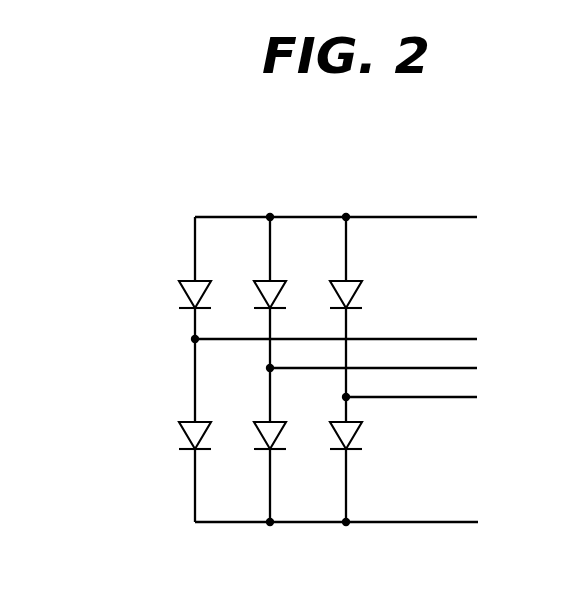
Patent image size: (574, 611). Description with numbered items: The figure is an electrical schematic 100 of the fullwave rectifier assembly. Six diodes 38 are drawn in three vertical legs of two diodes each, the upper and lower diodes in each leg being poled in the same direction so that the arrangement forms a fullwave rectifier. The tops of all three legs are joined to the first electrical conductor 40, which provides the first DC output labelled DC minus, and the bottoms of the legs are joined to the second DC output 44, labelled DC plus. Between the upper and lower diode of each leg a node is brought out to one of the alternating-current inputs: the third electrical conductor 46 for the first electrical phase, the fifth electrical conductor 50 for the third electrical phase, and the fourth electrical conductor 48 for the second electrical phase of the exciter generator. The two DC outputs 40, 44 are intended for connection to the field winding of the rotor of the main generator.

The electrical schematic 100 is at (195, 185).
The diode 38 is at (192, 294).
The first electrical conductor 40 is at (443, 216).
The second DC output 44 is at (425, 523).
The third electrical conductor 46 is at (447, 338).
The fifth electrical conductor 50 is at (410, 367).
The fourth electrical conductor 48 is at (437, 398).